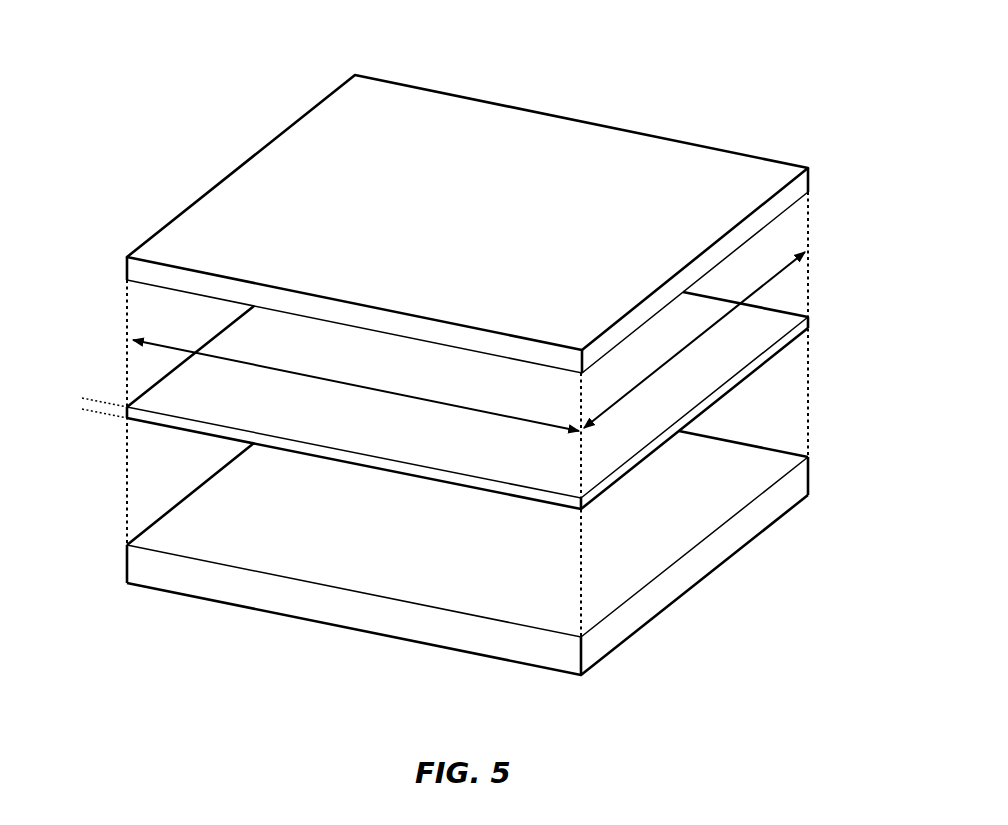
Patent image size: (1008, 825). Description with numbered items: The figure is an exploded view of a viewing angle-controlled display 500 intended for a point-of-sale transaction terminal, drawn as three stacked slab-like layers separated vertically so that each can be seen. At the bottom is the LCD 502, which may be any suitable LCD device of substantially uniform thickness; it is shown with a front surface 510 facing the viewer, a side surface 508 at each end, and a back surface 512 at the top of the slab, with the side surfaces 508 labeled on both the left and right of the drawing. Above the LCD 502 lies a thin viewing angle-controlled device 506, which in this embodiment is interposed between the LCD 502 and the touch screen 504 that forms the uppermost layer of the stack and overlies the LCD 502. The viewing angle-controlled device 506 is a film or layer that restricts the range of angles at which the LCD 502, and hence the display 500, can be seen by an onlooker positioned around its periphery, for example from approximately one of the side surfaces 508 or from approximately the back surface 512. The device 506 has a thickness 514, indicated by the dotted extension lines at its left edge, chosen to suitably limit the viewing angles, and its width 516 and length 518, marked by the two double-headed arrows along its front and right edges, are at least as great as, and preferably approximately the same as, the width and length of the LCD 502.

The viewing angle-controlled display 500 is at (459, 61).
The LCD 502 is at (737, 552).
The touch screen 504 is at (703, 145).
The viewing angle-controlled device 506 is at (758, 368).
The side surface 508 is at (175, 502).
The front surface 510 is at (303, 610).
The back surface 512 is at (743, 440).
The thickness 514 is at (93, 396).
The width 516 is at (175, 348).
The length 518 is at (708, 330).